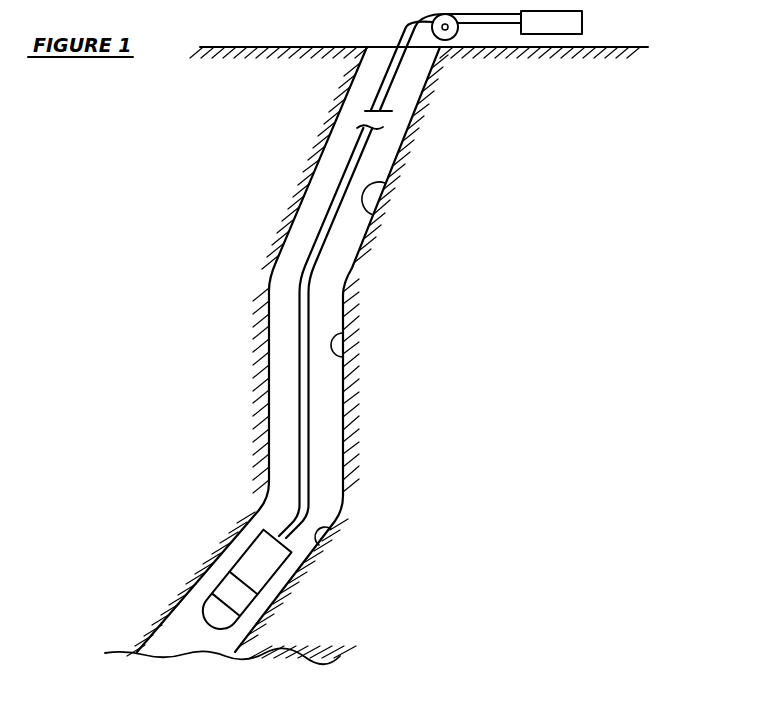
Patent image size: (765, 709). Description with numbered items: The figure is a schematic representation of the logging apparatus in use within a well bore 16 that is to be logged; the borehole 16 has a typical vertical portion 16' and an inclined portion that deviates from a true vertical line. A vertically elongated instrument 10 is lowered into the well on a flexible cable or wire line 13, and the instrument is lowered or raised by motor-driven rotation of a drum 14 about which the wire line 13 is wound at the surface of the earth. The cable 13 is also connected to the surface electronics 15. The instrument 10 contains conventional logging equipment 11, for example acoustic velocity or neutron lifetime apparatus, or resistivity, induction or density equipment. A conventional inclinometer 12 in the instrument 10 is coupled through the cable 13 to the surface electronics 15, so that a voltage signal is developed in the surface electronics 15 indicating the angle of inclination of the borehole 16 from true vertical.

The instrument 10 is at (290, 590).
The logging equipment 11 is at (243, 603).
The inclinometer 12 is at (277, 558).
The wire line 13 is at (362, 167).
The drum 14 is at (428, 16).
The surface electronics 15 is at (575, 22).
The well bore 16 is at (409, 195).
The vertical portion 16' is at (389, 332).